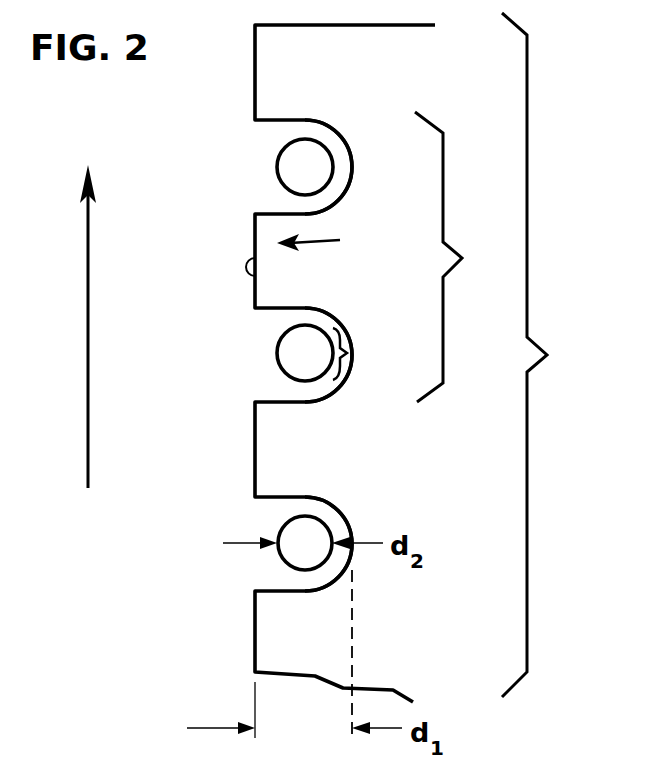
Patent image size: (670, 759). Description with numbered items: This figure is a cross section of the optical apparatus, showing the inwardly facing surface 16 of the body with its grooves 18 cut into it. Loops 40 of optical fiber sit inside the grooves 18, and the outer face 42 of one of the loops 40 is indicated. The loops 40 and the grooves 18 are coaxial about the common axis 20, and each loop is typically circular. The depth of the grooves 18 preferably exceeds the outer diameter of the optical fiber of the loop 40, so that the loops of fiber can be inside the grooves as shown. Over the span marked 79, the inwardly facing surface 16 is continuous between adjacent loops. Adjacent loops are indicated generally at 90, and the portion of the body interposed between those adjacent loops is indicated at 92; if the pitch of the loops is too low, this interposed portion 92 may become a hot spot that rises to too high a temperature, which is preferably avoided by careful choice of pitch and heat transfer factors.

The inwardly facing surface 16 is at (256, 273).
The grooves 18 is at (353, 162).
The common axis 20 is at (88, 343).
The loops of optical fiber 40 is at (293, 167).
The outer face 42 is at (349, 352).
The continuous inwardly facing surface region 79 is at (550, 355).
The adjacent loops 90 is at (462, 257).
The portion interposed between adjacent loops 92 is at (330, 242).